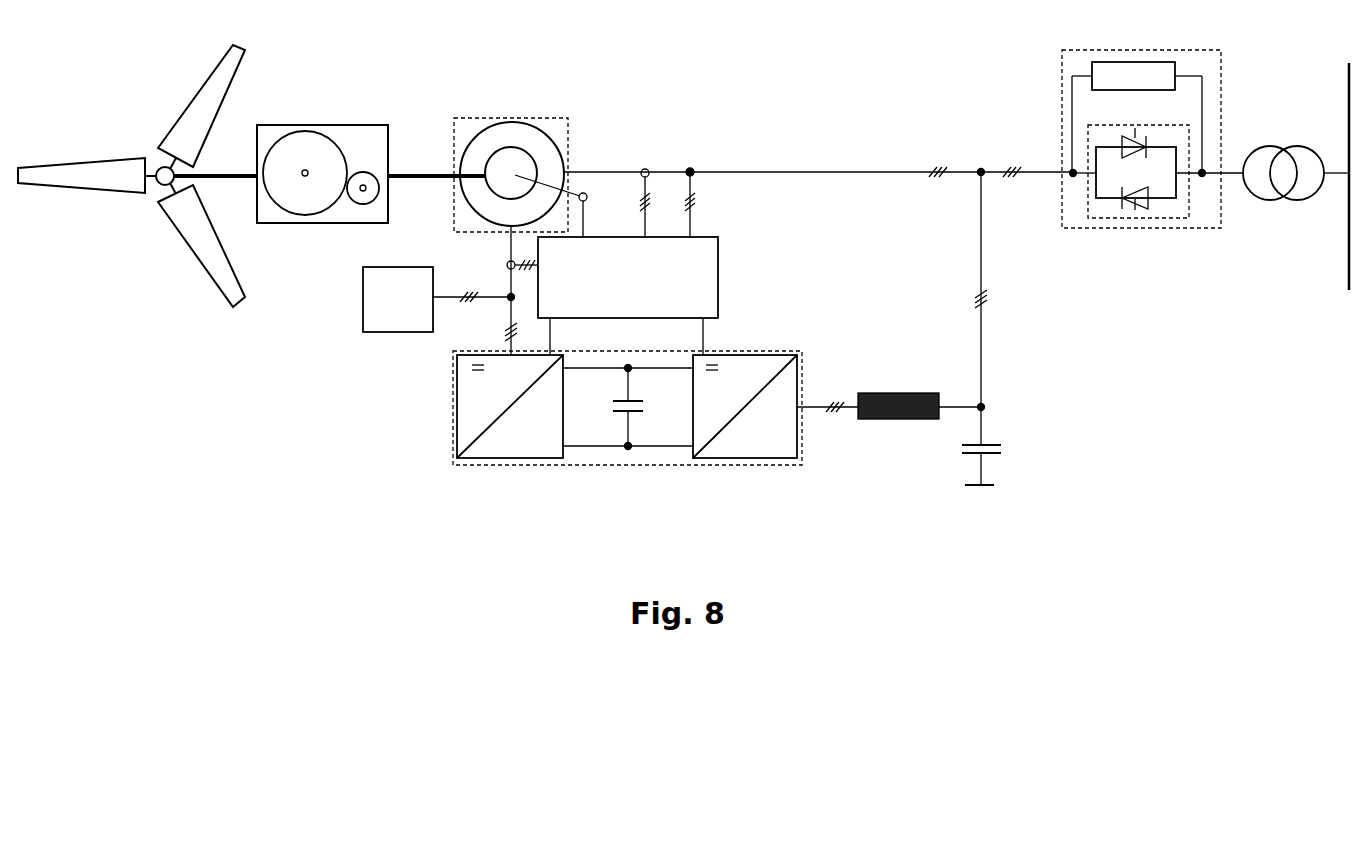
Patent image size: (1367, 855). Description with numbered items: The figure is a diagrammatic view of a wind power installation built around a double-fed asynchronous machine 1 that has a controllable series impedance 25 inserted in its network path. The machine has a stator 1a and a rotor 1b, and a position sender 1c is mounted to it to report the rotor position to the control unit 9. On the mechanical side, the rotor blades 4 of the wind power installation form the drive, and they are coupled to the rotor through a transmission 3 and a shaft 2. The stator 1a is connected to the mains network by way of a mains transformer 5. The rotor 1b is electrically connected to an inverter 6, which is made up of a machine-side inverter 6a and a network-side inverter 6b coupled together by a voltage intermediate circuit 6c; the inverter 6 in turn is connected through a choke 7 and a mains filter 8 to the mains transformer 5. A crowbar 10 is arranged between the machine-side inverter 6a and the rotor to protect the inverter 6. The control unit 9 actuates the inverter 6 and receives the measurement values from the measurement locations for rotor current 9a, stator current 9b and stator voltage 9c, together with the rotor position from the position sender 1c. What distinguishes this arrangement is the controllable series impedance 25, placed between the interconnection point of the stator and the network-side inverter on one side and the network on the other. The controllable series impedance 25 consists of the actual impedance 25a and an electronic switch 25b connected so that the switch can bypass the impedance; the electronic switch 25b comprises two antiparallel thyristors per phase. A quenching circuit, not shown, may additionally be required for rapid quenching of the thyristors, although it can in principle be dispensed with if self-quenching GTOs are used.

The double-fed asynchronous machine 1 is at (536, 165).
The stator 1a is at (512, 174).
The rotor 1b is at (511, 173).
The position sender 1c is at (567, 206).
The shaft 2 is at (437, 161).
The transmission 3 is at (322, 174).
The rotor blades 4 is at (137, 176).
The mains transformer 5 is at (1296, 176).
The inverter 6 is at (627, 425).
The machine-side inverter 6a is at (510, 406).
The network-side inverter 6b is at (745, 406).
The voltage intermediate circuit 6c is at (641, 407).
The choke 7 is at (889, 391).
The mains filter 8 is at (987, 446).
The control unit 9 is at (596, 247).
The rotor current measurement location 9a is at (506, 264).
The stator current measurement location 9b is at (645, 188).
The stator voltage measurement location 9c is at (690, 188).
The crowbar 10 is at (437, 299).
The controllable series impedance 25 is at (1152, 155).
The impedance 25a is at (1181, 68).
The electronic switch 25b is at (1100, 218).